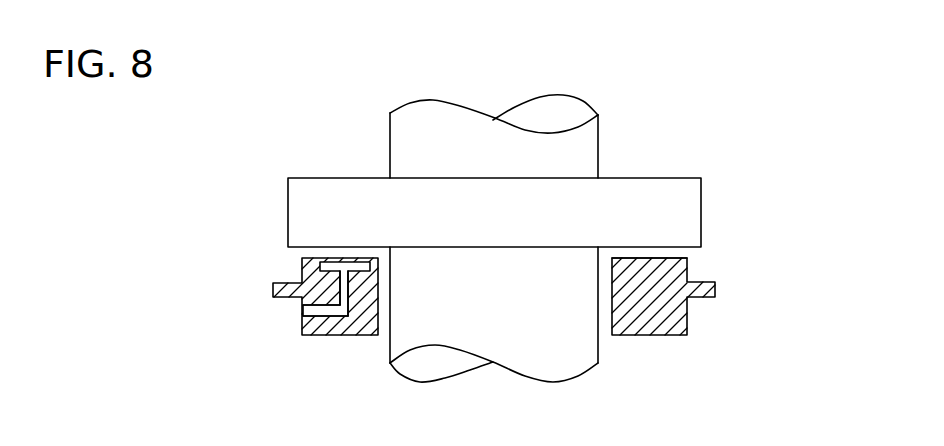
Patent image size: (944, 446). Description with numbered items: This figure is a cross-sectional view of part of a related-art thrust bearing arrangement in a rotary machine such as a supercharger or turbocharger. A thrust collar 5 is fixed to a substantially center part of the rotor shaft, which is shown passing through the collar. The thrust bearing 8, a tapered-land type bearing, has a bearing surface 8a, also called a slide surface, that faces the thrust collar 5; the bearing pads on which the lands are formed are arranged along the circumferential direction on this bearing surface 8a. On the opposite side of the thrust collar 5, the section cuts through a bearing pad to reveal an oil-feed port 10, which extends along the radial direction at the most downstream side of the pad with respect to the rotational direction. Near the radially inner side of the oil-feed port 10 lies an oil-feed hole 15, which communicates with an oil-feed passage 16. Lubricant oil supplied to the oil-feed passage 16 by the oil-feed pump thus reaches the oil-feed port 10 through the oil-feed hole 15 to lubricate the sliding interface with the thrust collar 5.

The thrust collar 5 is at (680, 215).
The thrust bearing 8 is at (693, 330).
The bearing surface 8a is at (668, 255).
The oil-feed port 10 is at (345, 266).
The oil-feed hole 15 is at (348, 288).
The oil-feed passage 16 is at (305, 266).